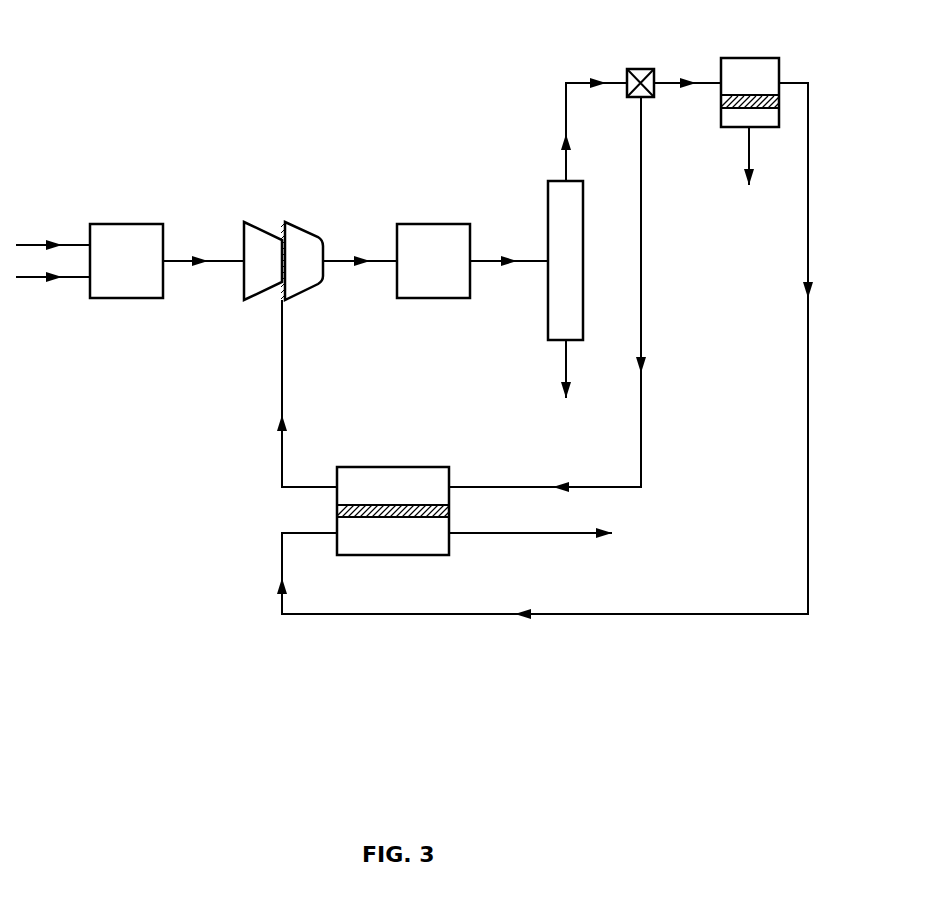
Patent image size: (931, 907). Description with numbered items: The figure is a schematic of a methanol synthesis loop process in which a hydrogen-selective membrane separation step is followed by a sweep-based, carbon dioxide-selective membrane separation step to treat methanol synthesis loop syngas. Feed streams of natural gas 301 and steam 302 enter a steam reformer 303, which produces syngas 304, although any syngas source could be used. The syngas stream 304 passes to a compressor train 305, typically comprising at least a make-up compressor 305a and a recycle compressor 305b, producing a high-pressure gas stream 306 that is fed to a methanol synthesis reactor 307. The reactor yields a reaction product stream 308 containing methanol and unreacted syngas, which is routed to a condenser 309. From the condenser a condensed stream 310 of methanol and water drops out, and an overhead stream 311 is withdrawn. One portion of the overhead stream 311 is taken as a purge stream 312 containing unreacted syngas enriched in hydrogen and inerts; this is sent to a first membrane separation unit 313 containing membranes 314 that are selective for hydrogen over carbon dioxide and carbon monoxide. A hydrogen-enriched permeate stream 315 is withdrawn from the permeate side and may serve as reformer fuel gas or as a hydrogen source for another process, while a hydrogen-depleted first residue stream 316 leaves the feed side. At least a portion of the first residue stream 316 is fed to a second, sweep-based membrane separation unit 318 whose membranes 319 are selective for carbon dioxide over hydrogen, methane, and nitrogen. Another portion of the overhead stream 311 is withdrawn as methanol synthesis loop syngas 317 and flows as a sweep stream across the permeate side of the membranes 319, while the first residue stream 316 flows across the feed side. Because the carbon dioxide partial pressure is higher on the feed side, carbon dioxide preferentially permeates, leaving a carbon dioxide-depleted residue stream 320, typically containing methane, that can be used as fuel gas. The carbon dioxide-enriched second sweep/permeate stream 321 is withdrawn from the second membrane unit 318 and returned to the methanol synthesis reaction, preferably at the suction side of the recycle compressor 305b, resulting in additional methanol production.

The natural gas feed stream 301 is at (53, 236).
The steam feed stream 302 is at (53, 290).
The steam reformer 303 is at (114, 299).
The syngas stream 304 is at (203, 273).
The compressor train 305 is at (327, 214).
The make-up compressor 305a is at (251, 300).
The recycle compressor 305b is at (300, 300).
The high-pressure gas stream 306 is at (360, 273).
The methanol synthesis reactor 307 is at (435, 298).
The reaction product stream 308 is at (509, 273).
The condenser 309 is at (548, 205).
The condensed stream 310 is at (568, 383).
The overhead stream 311 is at (594, 119).
The purge stream 312 is at (687, 73).
The first membrane separation unit 313 is at (748, 58).
The membranes 314 is at (722, 108).
The permeate stream 315 is at (753, 169).
The first residue stream 316 is at (545, 351).
The methanol synthesis loop syngas 317 is at (569, 294).
The second membrane separation unit 318 is at (397, 467).
The membranes 319 is at (337, 508).
The carbon dioxide-depleted residue stream 320 is at (554, 536).
The second sweep/permeate stream 321 is at (287, 393).